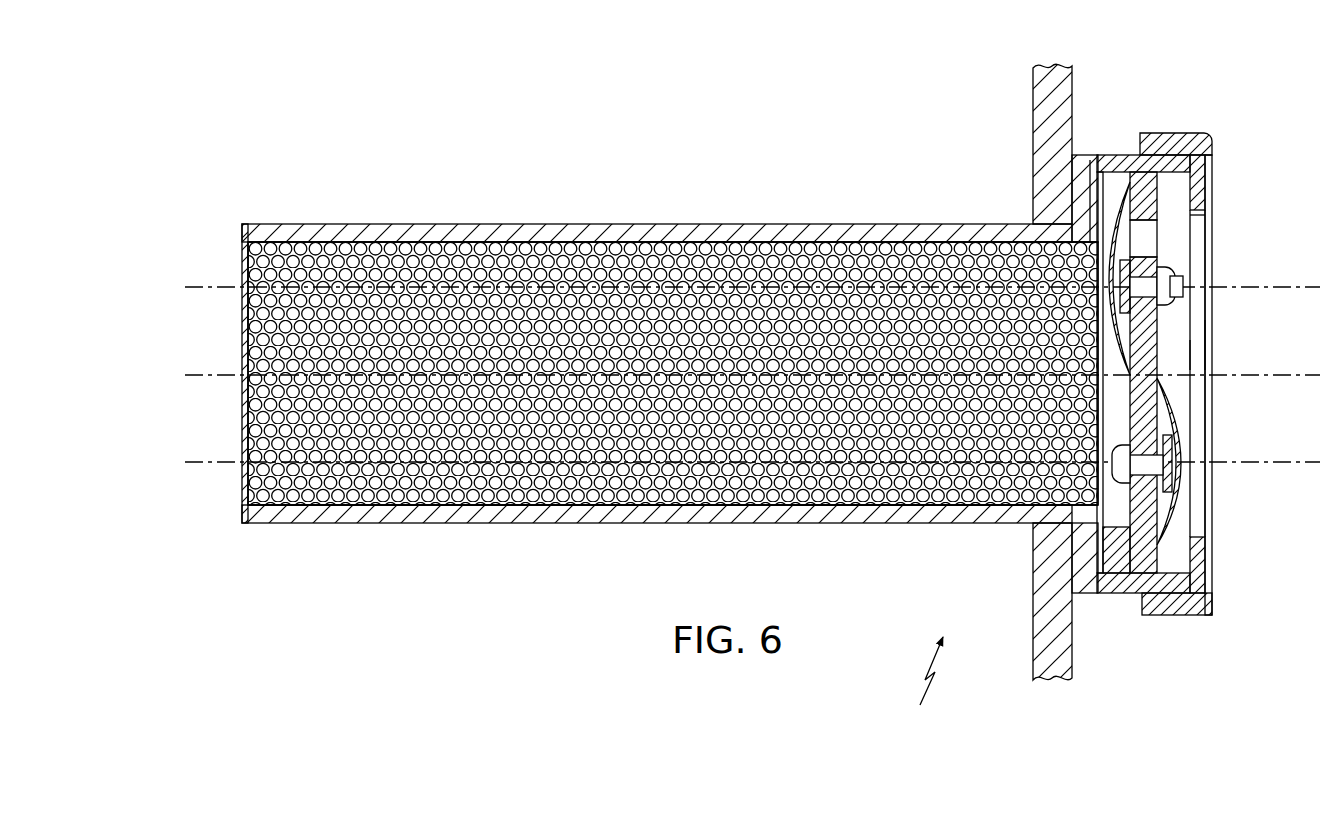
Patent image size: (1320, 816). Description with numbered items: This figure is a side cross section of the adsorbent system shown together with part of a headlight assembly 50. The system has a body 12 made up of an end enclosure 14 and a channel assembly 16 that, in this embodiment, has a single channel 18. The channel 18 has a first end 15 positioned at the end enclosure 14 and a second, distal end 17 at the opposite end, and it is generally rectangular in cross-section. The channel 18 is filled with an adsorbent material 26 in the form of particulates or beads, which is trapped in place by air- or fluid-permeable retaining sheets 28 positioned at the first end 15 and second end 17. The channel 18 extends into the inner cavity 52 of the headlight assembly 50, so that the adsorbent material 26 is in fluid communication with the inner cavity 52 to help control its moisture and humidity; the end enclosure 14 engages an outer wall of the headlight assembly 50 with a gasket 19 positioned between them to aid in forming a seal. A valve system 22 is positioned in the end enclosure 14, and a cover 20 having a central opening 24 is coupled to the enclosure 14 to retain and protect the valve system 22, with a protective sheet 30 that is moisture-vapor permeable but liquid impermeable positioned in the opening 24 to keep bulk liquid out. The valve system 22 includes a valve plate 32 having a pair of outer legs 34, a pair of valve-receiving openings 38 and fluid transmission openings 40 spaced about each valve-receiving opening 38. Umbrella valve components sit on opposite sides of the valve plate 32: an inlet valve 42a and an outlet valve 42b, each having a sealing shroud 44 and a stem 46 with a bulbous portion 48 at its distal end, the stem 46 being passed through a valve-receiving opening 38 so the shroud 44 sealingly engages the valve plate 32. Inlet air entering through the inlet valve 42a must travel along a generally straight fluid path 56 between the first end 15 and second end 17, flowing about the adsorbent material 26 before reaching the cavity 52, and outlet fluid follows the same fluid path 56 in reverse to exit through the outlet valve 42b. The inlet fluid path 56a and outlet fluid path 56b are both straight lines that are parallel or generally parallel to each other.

The body 12 is at (646, 353).
The end enclosure 14 is at (1098, 163).
The first end 15 is at (977, 240).
The channel assembly 16 is at (666, 366).
The second end 17 is at (298, 240).
The channel 18 is at (490, 239).
The gasket 19 is at (1080, 538).
The cover 20 is at (1178, 616).
The valve system 22 is at (1129, 380).
The central opening 24 is at (1197, 243).
The adsorbent material 26 is at (878, 249).
The retaining sheets 28 is at (247, 250).
The protective sheet 30 is at (1210, 345).
The valve plate 32 is at (1190, 352).
The outer legs 34 is at (1118, 190).
The valve-receiving openings 38 is at (1172, 470).
The fluid transmission openings 40 is at (1190, 222).
The inlet valve 42a is at (1112, 200).
The outlet valve 42b is at (1170, 518).
The sealing shroud 44 is at (1122, 238).
The stem 46 is at (1172, 282).
The bulbous portion 48 is at (1183, 290).
The headlight assembly 50 is at (1033, 622).
The inner cavity 52 is at (921, 688).
The fluid path 56 is at (208, 374).
The inlet fluid path 56a is at (198, 287).
The outlet fluid path 56b is at (215, 461).